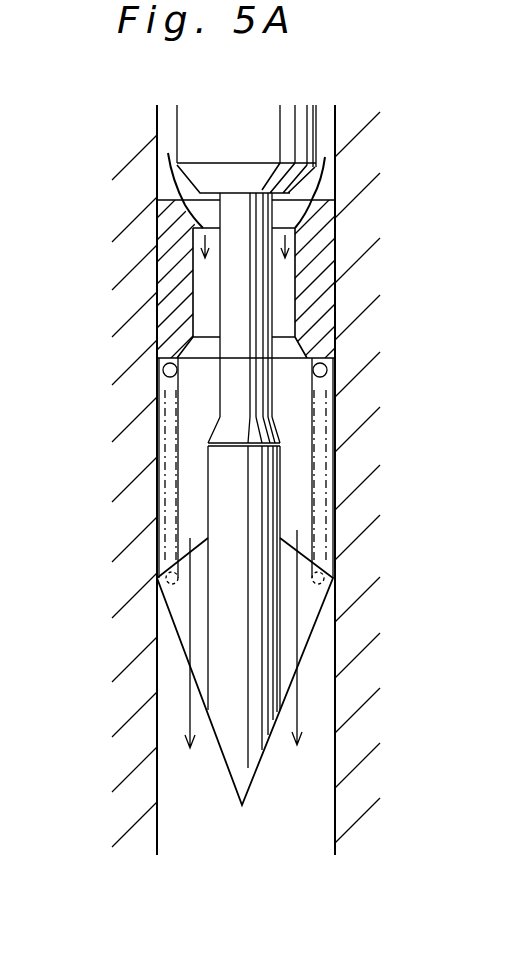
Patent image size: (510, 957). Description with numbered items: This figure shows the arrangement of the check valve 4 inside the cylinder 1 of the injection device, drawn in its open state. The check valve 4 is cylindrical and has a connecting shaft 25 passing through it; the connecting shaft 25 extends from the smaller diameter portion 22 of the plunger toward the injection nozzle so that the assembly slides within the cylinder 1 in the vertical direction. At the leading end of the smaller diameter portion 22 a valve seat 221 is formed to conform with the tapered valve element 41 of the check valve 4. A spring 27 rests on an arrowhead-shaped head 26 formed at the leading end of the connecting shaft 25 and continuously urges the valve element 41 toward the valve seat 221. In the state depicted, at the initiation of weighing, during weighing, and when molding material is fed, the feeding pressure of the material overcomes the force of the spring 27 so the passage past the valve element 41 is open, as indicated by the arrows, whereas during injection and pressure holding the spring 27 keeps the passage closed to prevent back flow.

The cylinder 1 is at (123, 680).
The smaller diameter portion of plunger 22 is at (303, 113).
The valve seat 221 is at (205, 182).
The valve element 41 is at (185, 212).
The check valve 4 is at (313, 283).
The connecting shaft 25 is at (258, 378).
The spring 27 is at (170, 466).
The arrowhead-shaped head 26 is at (287, 622).